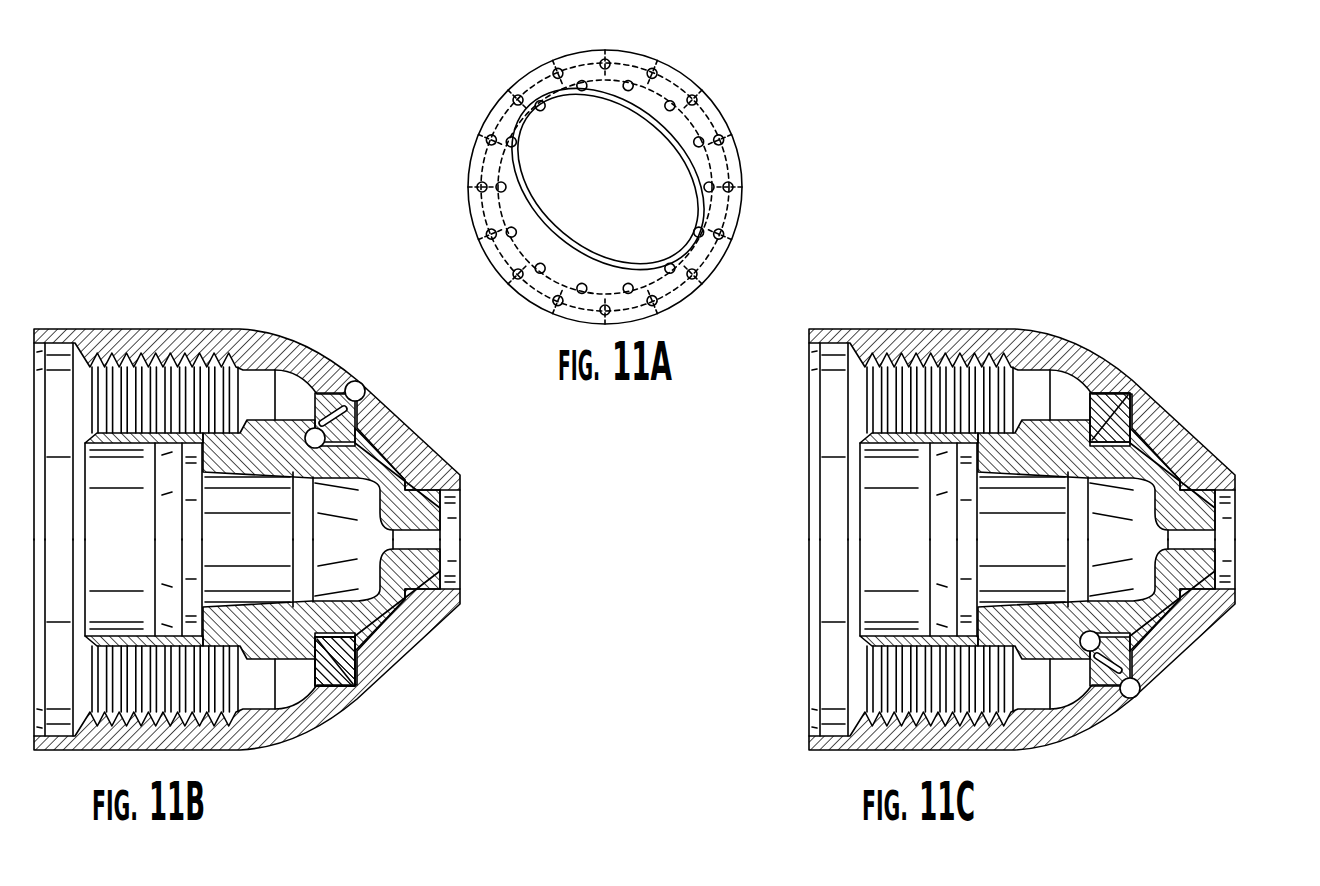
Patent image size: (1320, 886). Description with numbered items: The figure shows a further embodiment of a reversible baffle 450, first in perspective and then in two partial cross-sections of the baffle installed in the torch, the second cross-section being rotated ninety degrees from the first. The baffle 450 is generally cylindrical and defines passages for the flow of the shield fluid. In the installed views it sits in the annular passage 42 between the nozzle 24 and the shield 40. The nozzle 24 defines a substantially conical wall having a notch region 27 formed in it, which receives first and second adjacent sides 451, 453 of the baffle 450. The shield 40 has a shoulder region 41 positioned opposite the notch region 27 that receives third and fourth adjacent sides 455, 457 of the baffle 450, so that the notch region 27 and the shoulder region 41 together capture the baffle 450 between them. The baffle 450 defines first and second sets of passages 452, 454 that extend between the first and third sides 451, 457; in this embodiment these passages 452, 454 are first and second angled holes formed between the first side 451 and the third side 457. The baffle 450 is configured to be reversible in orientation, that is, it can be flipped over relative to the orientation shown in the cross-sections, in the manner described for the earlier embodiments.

In FIG. 11B, the nozzle 24 is at (479, 539).
In FIG. 11C, the nozzle 24 is at (1254, 539).
In FIG. 11B, the notch region 27 is at (282, 488).
In FIG. 11C, the notch region 27 is at (1057, 606).
In FIG. 11B, the shield 40 is at (247, 550).
In FIG. 11C, the shield 40 is at (1022, 550).
In FIG. 11B, the shoulder region 41 is at (381, 367).
In FIG. 11C, the shoulder region 41 is at (1157, 683).
In FIG. 11B, the annular passage 42 is at (154, 483).
In FIG. 11C, the annular passage 42 is at (929, 483).
In FIG. 11A, the reversible baffle 450 is at (640, 167).
In FIG. 11B, the first side 451 is at (284, 615).
In FIG. 11C, the first side 451 is at (1138, 464).
In FIG. 11A, the first set of passages 452 is at (605, 162).
In FIG. 11B, the first set of passages 452 is at (364, 509).
In FIG. 11A, the second side 453 is at (607, 178).
In FIG. 11B, the second side 453 is at (284, 615).
In FIG. 11C, the second side 453 is at (1138, 464).
In FIG. 11A, the second set of passages 454 is at (654, 187).
In FIG. 11C, the second set of passages 454 is at (1135, 512).
In FIG. 11A, the third side 455 is at (605, 192).
In FIG. 11B, the third side 455 is at (414, 669).
In FIG. 11C, the third side 455 is at (1138, 464).
In FIG. 11A, the fourth side 457 is at (598, 155).
In FIG. 11B, the fourth side 457 is at (414, 669).